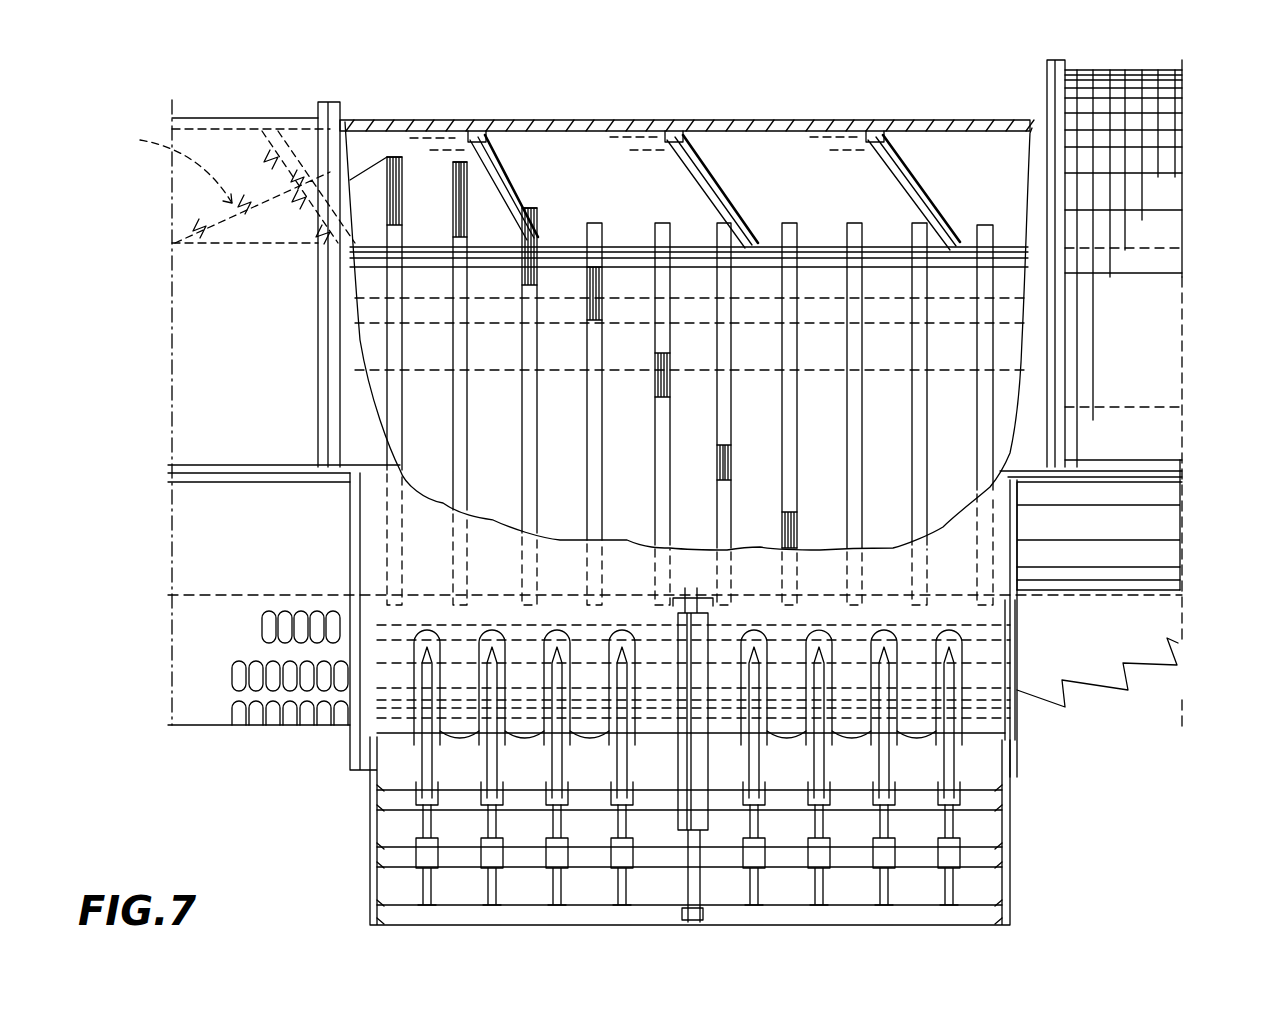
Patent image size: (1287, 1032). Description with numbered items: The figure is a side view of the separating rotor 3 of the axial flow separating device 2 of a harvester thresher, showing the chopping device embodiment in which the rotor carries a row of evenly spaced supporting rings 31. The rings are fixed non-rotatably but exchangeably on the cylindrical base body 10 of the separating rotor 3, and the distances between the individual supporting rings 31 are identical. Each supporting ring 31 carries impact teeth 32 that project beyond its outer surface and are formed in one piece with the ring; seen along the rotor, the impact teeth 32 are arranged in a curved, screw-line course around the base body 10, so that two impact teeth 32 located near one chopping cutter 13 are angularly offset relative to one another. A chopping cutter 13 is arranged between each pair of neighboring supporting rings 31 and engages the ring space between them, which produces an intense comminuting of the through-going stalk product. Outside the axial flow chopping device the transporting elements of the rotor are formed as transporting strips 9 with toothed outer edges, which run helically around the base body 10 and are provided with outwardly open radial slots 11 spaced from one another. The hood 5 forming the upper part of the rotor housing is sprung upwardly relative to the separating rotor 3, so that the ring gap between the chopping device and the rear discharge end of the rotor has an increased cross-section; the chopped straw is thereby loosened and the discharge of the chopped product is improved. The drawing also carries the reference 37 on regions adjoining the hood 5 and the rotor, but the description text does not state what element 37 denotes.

The separating device 2 is at (212, 741).
The separating rotor 3 is at (1140, 553).
The hood 5 is at (1157, 227).
The transporting strips 9 is at (1115, 757).
The base body 10 is at (1167, 518).
The radial slots 11 is at (439, 174).
The chopping cutter 13 is at (492, 762).
The supporting rings 31 is at (457, 458).
The impact teeth 32 is at (452, 232).
The chamber 37 is at (980, 157).